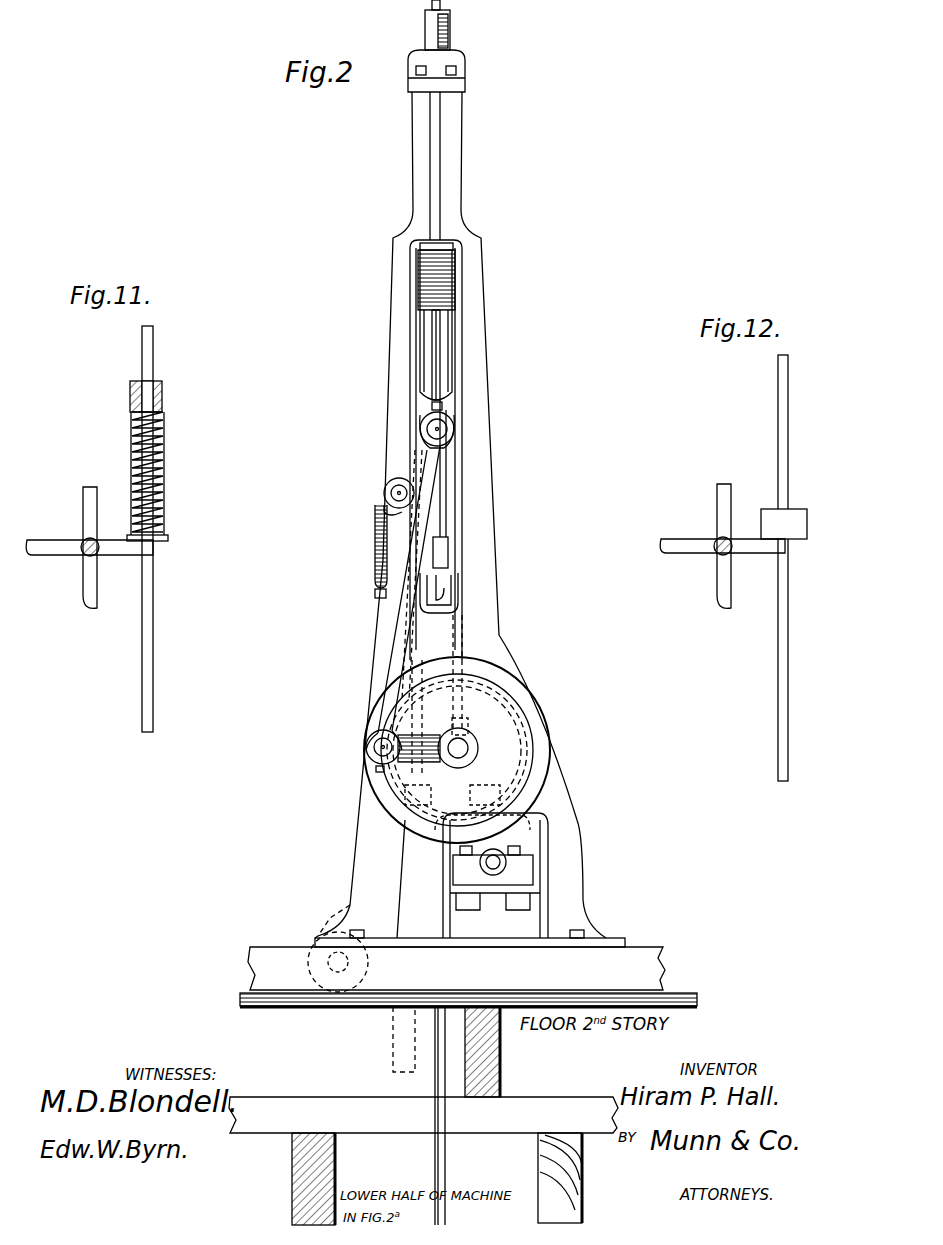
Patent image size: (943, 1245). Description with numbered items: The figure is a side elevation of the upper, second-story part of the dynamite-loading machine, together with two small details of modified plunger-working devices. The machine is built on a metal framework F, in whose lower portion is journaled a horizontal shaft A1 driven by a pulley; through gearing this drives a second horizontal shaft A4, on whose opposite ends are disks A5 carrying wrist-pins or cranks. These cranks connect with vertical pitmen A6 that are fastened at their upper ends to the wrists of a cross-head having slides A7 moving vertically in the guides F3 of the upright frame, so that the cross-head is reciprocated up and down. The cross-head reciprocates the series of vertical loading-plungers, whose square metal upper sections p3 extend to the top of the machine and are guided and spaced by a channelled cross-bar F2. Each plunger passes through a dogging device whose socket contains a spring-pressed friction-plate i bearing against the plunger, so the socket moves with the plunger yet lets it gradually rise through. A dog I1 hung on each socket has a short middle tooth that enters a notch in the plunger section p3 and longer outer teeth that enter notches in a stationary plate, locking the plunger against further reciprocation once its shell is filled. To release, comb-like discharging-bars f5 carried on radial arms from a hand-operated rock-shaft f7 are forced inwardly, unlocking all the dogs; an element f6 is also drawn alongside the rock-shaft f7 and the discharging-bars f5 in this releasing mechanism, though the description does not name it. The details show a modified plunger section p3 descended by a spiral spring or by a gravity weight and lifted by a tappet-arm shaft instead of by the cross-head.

In FIG. 2, the metal framework F is at (452, 172).
In FIG. 2, the cross-bar F2 is at (420, 270).
In FIG. 2, the guides F3 is at (420, 366).
In FIG. 2, the square metal plunger-section p3 is at (440, 337).
In FIG. 11, the square metal plunger-section p3 is at (144, 614).
In FIG. 12, the square metal plunger-section p3 is at (784, 637).
In FIG. 2, the slides A7 is at (449, 396).
In FIG. 2, the vertical pitmen A6 is at (402, 634).
In FIG. 2, the rock-shaft f7 is at (396, 496).
In FIG. 2, the spring f6 is at (377, 568).
In FIG. 2, the discharging-bars f5 is at (376, 598).
In FIG. 2, the friction-plate i is at (443, 540).
In FIG. 2, the dog I1 is at (450, 598).
In FIG. 2, the disks A5 is at (445, 828).
In FIG. 2, the horizontal shaft A4 is at (458, 750).
In FIG. 2, the horizontal shaft A1 is at (495, 862).